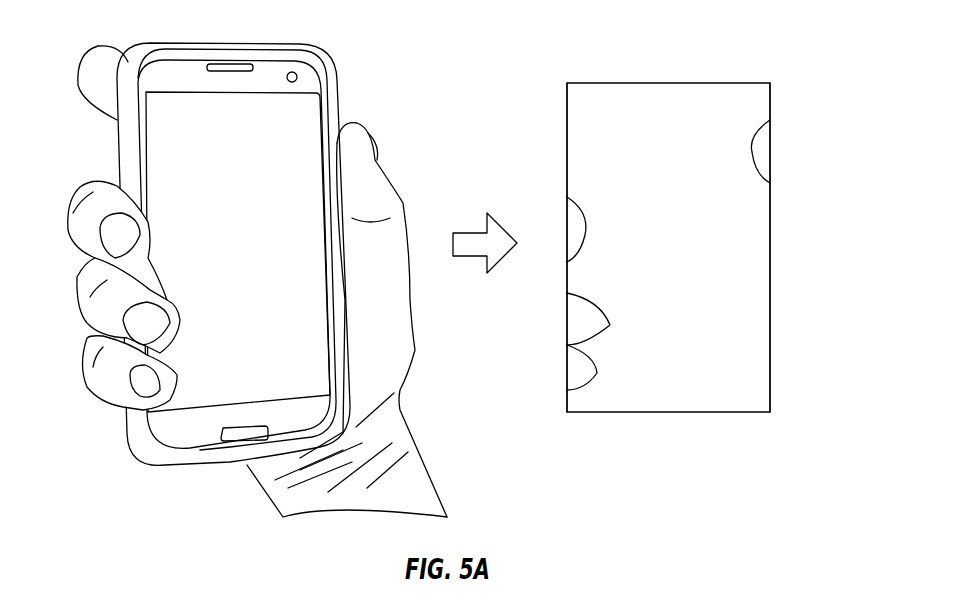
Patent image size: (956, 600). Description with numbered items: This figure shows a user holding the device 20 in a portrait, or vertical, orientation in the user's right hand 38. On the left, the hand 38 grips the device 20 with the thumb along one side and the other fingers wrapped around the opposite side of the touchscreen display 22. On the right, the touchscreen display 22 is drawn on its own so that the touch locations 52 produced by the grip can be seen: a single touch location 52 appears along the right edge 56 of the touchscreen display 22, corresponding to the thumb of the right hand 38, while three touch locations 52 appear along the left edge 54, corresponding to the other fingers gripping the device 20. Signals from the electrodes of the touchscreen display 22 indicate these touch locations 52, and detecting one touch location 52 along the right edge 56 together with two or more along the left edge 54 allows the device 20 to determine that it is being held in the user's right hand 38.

The device 20 is at (205, 43).
The touchscreen display 22 is at (317, 77).
The hand 38 is at (387, 380).
The touch location 52 is at (587, 238).
The left edge 54 is at (565, 432).
The right edge 56 is at (768, 432).